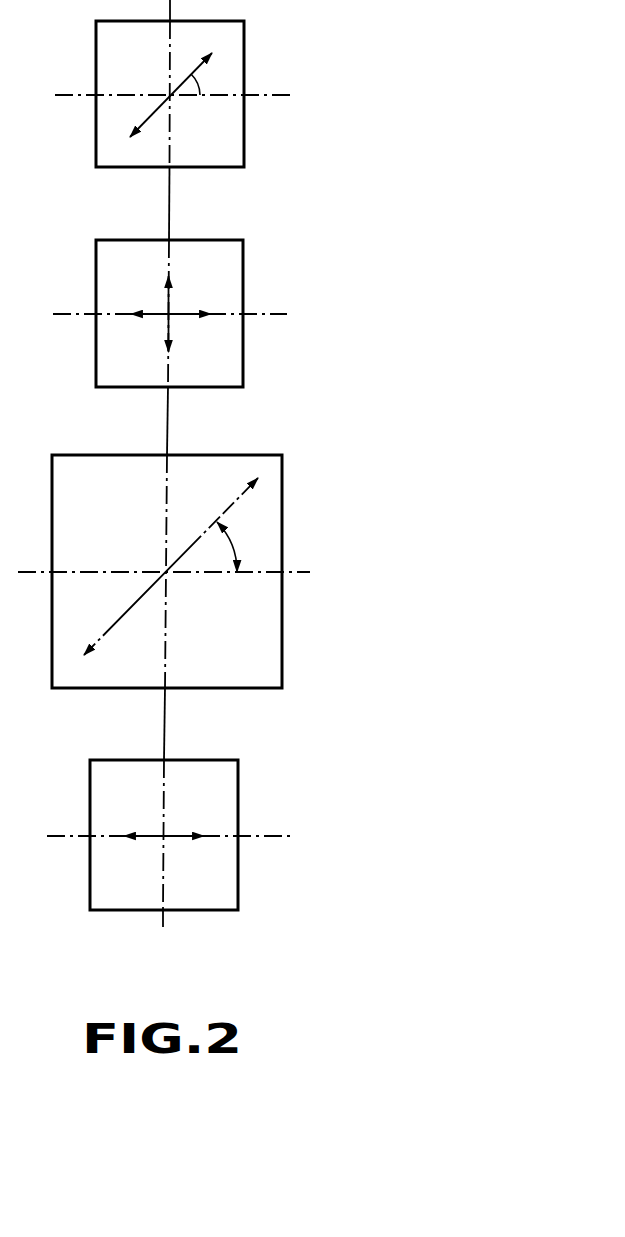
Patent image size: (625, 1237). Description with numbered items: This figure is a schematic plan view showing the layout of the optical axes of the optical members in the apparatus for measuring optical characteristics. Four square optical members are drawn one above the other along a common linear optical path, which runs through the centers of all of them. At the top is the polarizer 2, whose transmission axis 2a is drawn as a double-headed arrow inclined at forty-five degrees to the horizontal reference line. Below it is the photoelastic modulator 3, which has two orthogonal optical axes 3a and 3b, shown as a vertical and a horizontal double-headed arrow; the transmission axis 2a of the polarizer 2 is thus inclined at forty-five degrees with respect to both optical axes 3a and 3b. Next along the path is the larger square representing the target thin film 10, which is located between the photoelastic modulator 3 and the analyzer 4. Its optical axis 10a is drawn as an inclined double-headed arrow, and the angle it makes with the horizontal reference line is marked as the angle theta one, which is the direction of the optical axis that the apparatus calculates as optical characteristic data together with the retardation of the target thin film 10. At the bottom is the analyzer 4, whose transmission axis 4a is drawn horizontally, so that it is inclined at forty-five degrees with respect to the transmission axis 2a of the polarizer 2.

The polarizer 2 is at (244, 51).
The transmission axis of the polarizer 2a is at (150, 110).
The photoelastic modulator 3 is at (243, 297).
The optical axis of the photoelastic modulator 3a is at (170, 300).
The optical axis of the photoelastic modulator 3b is at (157, 315).
The target thin film 10 is at (282, 527).
The optical axis of the target thin film 10a is at (236, 503).
The analyzer 4 is at (238, 806).
The transmission axis of the analyzer 4a is at (178, 830).